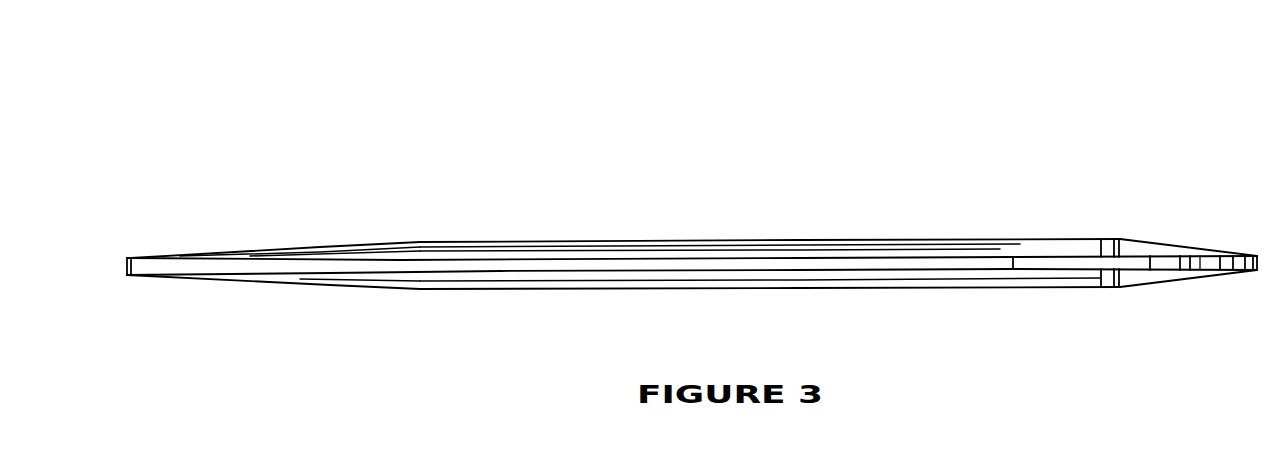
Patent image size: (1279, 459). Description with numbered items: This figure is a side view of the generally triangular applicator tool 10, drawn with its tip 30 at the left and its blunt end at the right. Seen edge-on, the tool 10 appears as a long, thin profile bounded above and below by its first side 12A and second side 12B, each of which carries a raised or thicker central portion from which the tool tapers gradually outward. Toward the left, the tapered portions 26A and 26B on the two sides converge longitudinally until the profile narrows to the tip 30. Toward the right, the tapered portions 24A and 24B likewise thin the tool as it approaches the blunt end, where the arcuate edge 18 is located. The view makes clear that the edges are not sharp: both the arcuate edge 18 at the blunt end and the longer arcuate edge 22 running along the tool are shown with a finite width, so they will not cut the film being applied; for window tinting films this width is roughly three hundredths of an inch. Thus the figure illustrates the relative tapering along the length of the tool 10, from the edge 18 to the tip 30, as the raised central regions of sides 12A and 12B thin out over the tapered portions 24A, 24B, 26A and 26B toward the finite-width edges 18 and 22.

The applicator tool 10 is at (440, 120).
The first side 12A is at (813, 240).
The second side 12B is at (813, 288).
The arcuate edge 18 is at (1257, 260).
The arcuate edge 22 is at (1037, 266).
The tapered portion 24A is at (1179, 217).
The tapered portion 24B is at (1179, 306).
The tapered portion 26A is at (328, 253).
The tapered portion 26B is at (327, 287).
The tip 30 is at (126, 267).